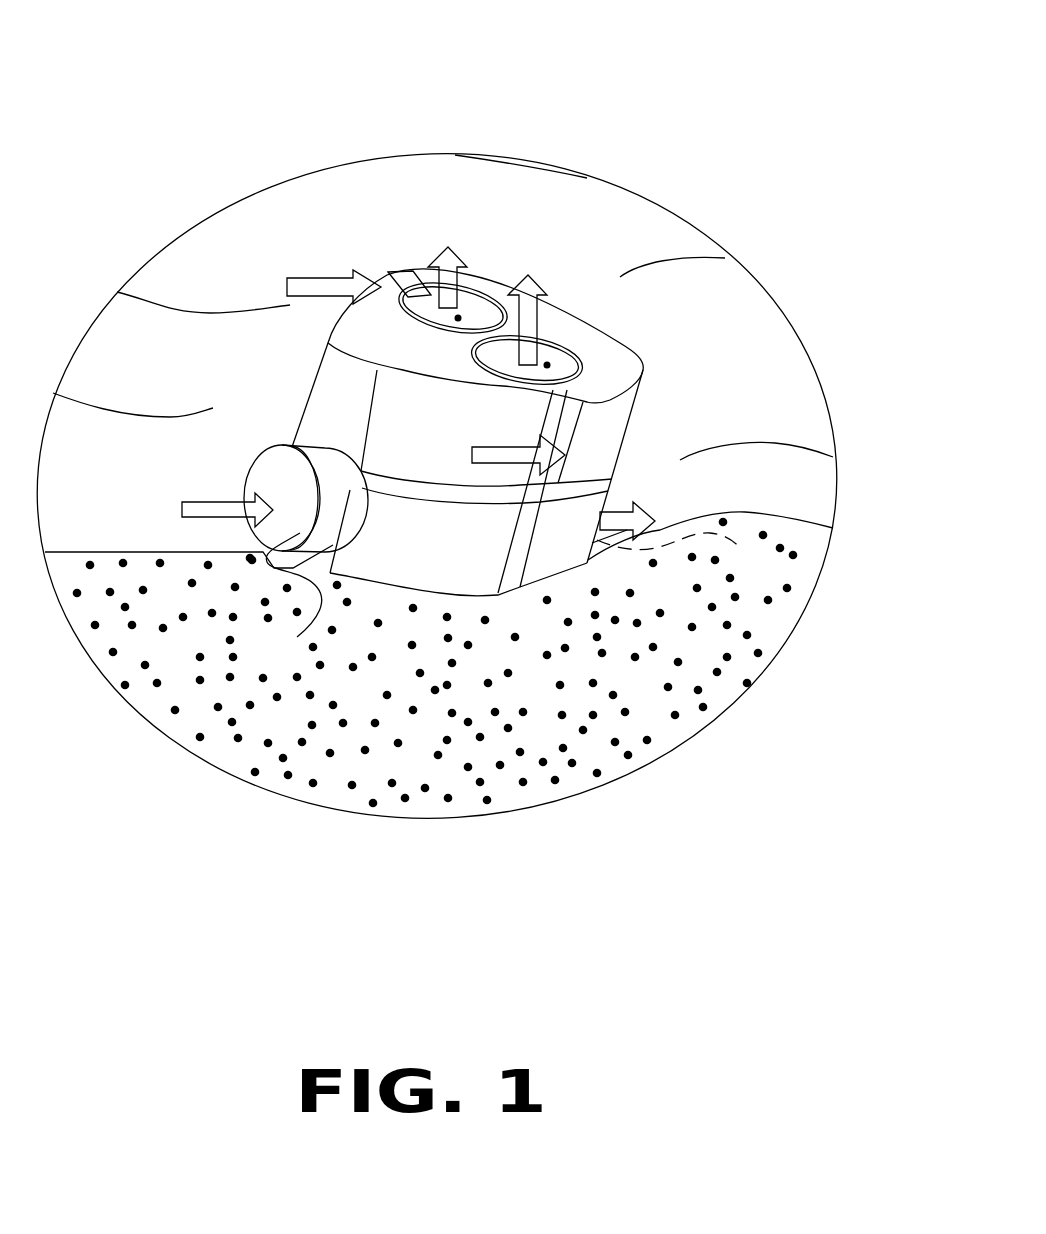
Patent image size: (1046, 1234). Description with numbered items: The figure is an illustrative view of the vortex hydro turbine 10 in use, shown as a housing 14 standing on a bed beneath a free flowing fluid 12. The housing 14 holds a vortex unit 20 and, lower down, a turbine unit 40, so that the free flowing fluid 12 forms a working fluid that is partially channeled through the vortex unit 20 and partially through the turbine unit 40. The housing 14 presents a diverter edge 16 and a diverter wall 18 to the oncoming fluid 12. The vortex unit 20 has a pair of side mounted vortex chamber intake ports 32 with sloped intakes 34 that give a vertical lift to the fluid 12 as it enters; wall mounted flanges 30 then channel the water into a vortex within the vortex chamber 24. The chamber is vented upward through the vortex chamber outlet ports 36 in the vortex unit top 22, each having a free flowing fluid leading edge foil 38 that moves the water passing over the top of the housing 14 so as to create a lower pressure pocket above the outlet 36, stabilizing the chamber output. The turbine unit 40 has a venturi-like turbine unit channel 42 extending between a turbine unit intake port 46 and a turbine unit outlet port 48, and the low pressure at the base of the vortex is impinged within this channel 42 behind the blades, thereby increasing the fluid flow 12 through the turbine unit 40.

The vortex hydro turbine 10 is at (759, 150).
The free flowing fluid 12 is at (448, 247).
The housing 14 is at (613, 343).
The diverter edge 16 is at (320, 355).
The diverter wall 18 is at (363, 385).
The vortex unit 20 is at (628, 421).
The vortex unit top 22 is at (360, 348).
The vortex chamber 24 is at (458, 318).
The flanges 30 is at (430, 290).
The vortex chamber intake port 32 is at (383, 277).
The sloped intake 34 is at (292, 447).
The vortex chamber outlet port 36 is at (480, 297).
The vortex chamber outlet port foil 38 is at (487, 333).
The turbine unit 40 is at (588, 562).
The turbine unit channel 42 is at (340, 510).
The turbine unit intake port 46 is at (286, 601).
The turbine unit outlet port 48 is at (736, 542).